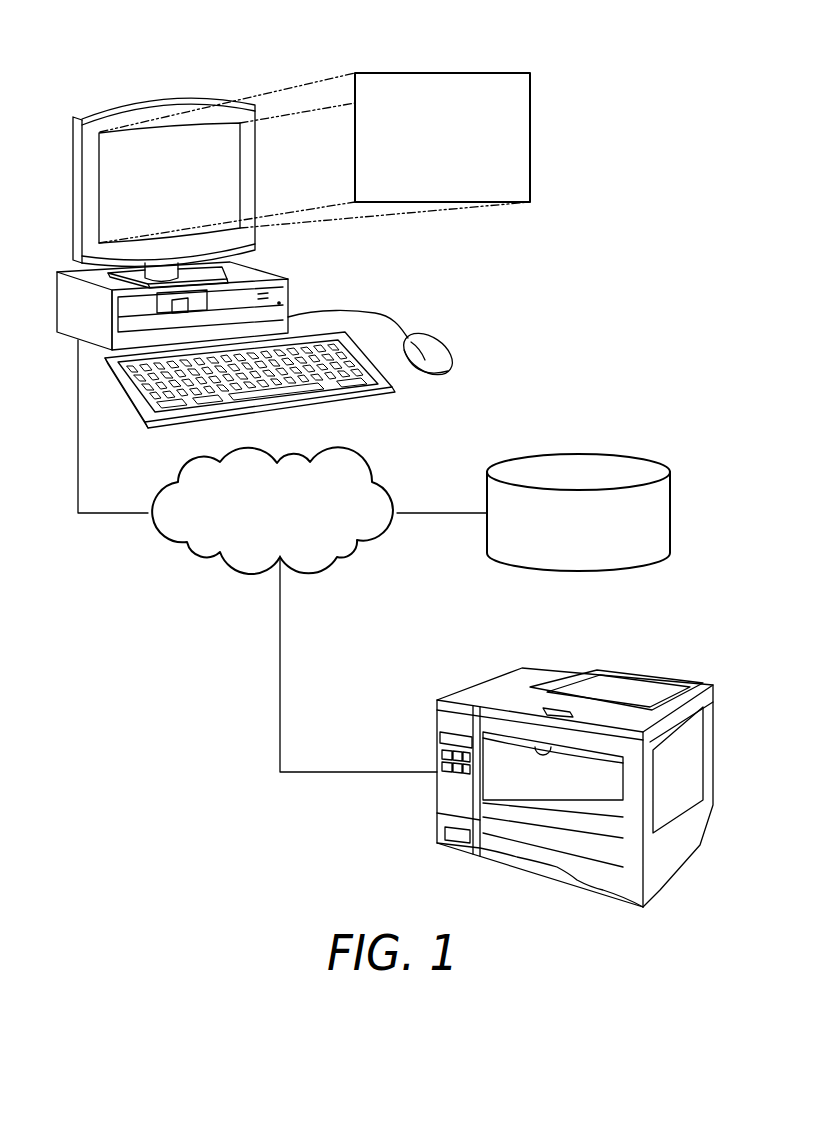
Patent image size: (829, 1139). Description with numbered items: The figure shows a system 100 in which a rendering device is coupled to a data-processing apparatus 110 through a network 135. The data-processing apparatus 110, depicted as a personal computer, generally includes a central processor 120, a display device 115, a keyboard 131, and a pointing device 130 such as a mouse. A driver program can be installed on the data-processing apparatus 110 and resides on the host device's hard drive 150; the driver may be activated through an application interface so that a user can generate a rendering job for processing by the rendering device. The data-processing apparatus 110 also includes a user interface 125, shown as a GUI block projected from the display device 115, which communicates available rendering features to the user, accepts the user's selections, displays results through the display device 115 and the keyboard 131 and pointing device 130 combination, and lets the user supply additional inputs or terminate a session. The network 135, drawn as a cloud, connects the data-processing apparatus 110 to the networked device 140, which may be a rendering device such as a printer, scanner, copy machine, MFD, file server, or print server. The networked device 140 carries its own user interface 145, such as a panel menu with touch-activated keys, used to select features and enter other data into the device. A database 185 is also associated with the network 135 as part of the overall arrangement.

The system 100 is at (589, 71).
The data-processing apparatus 110 is at (184, 100).
The display device 115 is at (125, 145).
The central processor 120 is at (72, 340).
The user interface 125 is at (530, 137).
The pointing device 130 is at (410, 300).
The keyboard 131 is at (357, 393).
The network 135 is at (203, 552).
The networked device 140 is at (533, 667).
The user interface 145 is at (438, 737).
The hard drive 150 is at (60, 271).
The database 185 is at (577, 452).